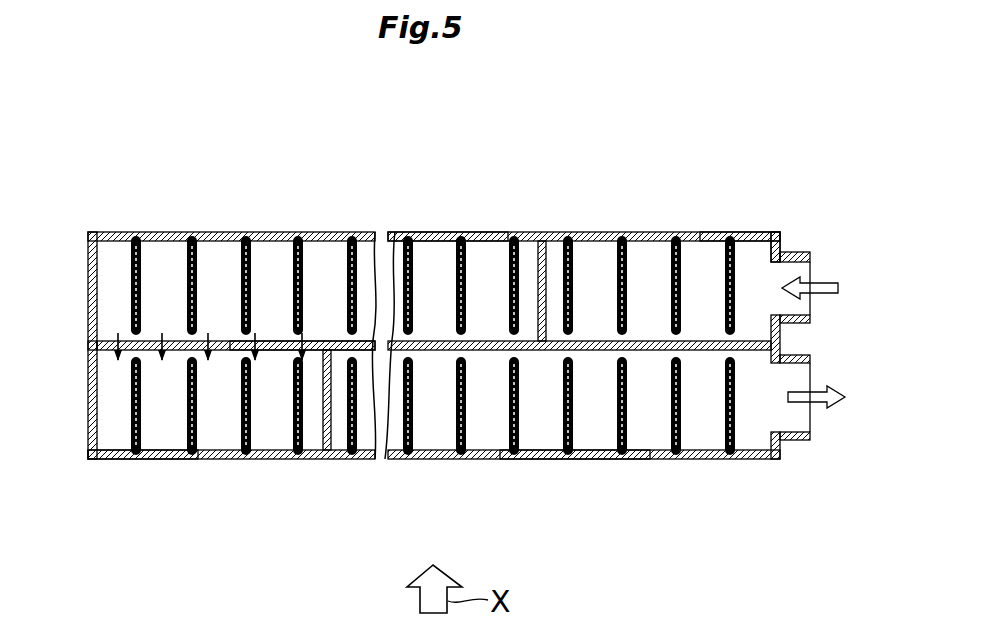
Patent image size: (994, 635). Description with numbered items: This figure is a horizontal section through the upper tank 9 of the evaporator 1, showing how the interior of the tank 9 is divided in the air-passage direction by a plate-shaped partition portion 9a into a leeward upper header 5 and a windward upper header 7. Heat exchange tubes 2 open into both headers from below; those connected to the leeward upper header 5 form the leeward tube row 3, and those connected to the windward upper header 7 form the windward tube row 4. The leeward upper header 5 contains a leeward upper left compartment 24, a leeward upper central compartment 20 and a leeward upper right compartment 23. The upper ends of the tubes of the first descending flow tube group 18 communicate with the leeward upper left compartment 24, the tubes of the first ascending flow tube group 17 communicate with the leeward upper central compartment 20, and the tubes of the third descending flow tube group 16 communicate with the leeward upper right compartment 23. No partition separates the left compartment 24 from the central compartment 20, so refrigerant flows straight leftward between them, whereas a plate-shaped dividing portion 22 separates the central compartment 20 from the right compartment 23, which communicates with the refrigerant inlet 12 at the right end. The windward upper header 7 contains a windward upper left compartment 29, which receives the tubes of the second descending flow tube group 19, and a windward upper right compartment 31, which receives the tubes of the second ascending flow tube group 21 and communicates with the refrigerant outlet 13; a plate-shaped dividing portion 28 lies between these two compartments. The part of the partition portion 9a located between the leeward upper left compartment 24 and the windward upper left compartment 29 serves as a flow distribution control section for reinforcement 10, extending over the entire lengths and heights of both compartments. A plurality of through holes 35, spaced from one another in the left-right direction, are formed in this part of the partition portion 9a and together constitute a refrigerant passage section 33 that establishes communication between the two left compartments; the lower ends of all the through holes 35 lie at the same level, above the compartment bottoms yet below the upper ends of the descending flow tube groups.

The evaporator 1 is at (728, 116).
The heat exchange tubes 2 is at (294, 425).
The leeward tube row 3 is at (133, 280).
The windward tube row 4 is at (133, 410).
The leeward upper header 5 is at (425, 232).
The windward upper header 7 is at (458, 459).
The tank 9 is at (598, 184).
The partition portion 9a is at (757, 352).
The flow distribution control section for reinforcement 10 is at (180, 340).
The refrigerant inlet 12 is at (795, 262).
The refrigerant outlet 13 is at (795, 363).
The third descending flow tube group 16 is at (628, 262).
The first ascending flow tube group 17 is at (462, 265).
The first descending flow tube group 18 is at (192, 247).
The second descending flow tube group 19 is at (157, 459).
The leeward upper central compartment 20 is at (440, 232).
The second ascending flow tube group 21 is at (648, 459).
The dividing portion 22 is at (543, 255).
The leeward upper right compartment 23 is at (745, 232).
The leeward upper left compartment 24 is at (232, 232).
The dividing portion 28 is at (330, 445).
The windward upper left compartment 29 is at (178, 459).
The windward upper right compartment 31 is at (573, 459).
The refrigerant passage section 33 is at (308, 340).
The through holes 35 is at (155, 373).